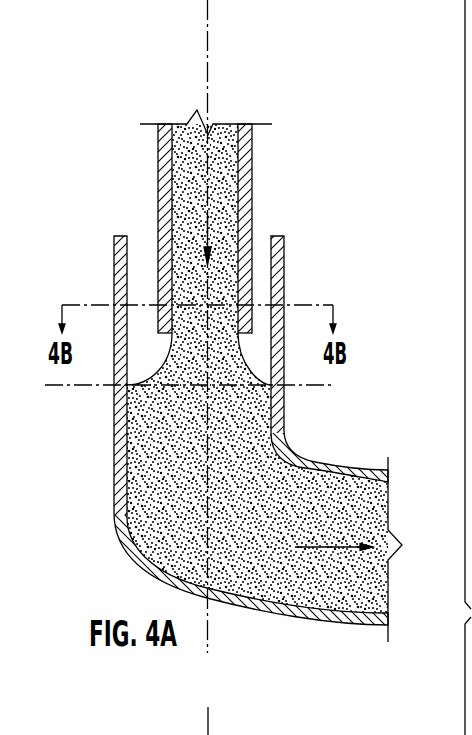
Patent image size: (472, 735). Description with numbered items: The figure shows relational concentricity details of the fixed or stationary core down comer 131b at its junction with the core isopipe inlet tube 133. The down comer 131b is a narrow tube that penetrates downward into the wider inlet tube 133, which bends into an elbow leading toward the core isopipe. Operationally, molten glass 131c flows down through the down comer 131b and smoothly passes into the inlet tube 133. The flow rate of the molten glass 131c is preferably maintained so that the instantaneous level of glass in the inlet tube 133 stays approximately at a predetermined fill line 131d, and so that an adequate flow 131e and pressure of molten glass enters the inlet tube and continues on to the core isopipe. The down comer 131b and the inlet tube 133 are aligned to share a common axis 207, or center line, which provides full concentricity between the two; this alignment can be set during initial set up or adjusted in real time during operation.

The common axis 207 is at (208, 87).
The core down comer 131b is at (252, 172).
The molten glass 131c is at (210, 230).
The core isopipe inlet tube 133 is at (284, 292).
The fill line 131d is at (333, 385).
The flow 131e is at (337, 545).